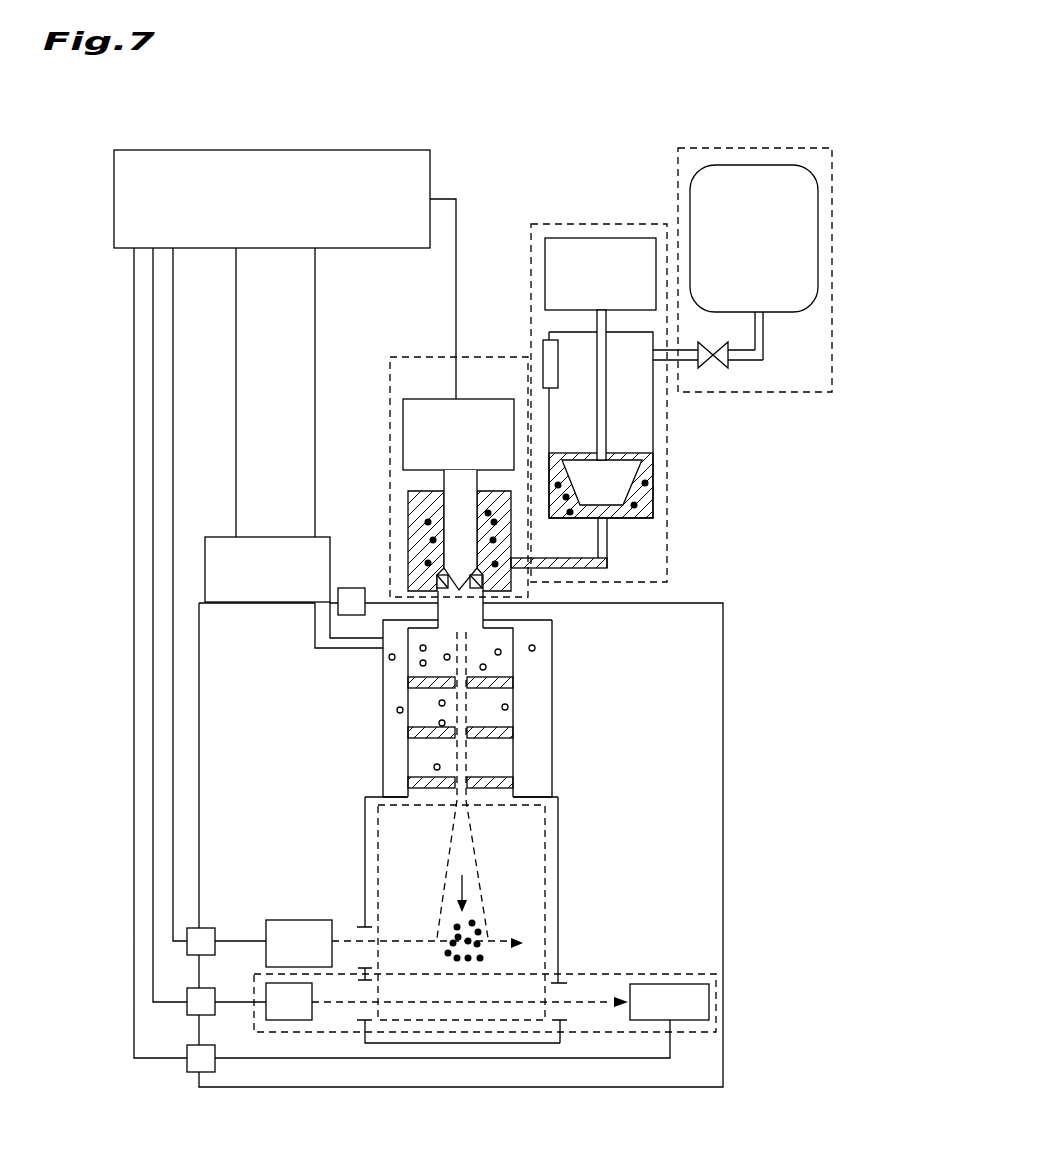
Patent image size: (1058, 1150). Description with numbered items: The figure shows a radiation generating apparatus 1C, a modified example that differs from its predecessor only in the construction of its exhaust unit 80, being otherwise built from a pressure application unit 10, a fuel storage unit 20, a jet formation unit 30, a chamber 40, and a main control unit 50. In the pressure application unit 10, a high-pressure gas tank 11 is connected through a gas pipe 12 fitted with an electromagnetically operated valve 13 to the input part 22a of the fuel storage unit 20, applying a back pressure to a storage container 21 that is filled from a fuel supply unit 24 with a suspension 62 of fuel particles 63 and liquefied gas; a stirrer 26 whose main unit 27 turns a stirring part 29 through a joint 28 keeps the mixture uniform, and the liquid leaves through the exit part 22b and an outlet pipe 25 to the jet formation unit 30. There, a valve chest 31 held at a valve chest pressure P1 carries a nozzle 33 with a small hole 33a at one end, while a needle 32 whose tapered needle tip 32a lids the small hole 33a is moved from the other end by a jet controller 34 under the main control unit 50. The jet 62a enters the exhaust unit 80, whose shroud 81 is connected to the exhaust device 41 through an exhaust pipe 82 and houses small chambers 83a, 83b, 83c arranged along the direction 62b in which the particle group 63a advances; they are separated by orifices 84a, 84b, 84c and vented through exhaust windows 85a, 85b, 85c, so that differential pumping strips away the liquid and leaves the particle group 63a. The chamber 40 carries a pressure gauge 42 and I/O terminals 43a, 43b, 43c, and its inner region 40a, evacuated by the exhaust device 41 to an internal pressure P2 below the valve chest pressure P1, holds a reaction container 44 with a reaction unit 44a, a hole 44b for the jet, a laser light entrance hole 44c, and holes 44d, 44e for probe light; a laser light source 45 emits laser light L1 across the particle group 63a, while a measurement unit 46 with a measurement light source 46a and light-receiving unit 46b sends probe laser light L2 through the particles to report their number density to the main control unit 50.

The radiation generating apparatus 1C is at (710, 65).
The pressure application unit 10 is at (833, 202).
The high-pressure gas tank 11 is at (820, 250).
The gas pipe 12 is at (760, 330).
The valve 13 is at (723, 368).
The fuel storage unit 20 is at (618, 223).
The storage container 21 is at (657, 433).
The input part 22a is at (652, 353).
The exit part 22b is at (605, 538).
The fuel supply unit 24 is at (543, 348).
The outlet pipe 25 is at (602, 560).
The stirrer 26 is at (604, 237).
The main unit 27 is at (566, 247).
The joint 28 is at (597, 316).
The stirring part 29 is at (625, 475).
The jet formation unit 30 is at (415, 357).
The valve chest 31 is at (408, 540).
The needle 32 is at (444, 482).
The needle tip 32a is at (462, 597).
The nozzle 33 is at (437, 580).
The small hole 33a is at (466, 591).
The jet controller 34 is at (403, 422).
The chamber 40 is at (723, 695).
The inner region 40a is at (703, 637).
The exhaust device 41 is at (218, 537).
The pressure gauge 42 is at (353, 588).
The I/O terminal 43a is at (207, 927).
The I/O terminal 43b is at (187, 1010).
The I/O terminal 43c is at (192, 1072).
The reaction container 44 is at (558, 858).
The reaction unit 44a is at (545, 877).
The hole 44b is at (508, 804).
The laser light entrance hole 44c is at (358, 932).
The hole 44d is at (360, 1022).
The hole 44e is at (568, 1020).
The laser light source 45 is at (282, 920).
The measurement unit 46 is at (650, 975).
The measurement light source 46a is at (283, 1020).
The light-receiving unit 46b is at (709, 1010).
The main control unit 50 is at (356, 150).
The suspension 62 is at (643, 457).
The jet 62a is at (450, 867).
The direction 62b is at (463, 890).
The fuel particles 63 is at (632, 505).
The particle group 63a is at (504, 914).
The exhaust unit 80 is at (278, 706).
The shroud 81 is at (553, 667).
The exhaust pipe 82 is at (322, 622).
The small chamber 83a is at (447, 640).
The small chamber 83b is at (440, 716).
The small chamber 83c is at (420, 768).
The orifice 84a is at (515, 680).
The orifice 84b is at (515, 731).
The orifice 84c is at (515, 783).
The exhaust window 85a is at (400, 663).
The exhaust window 85b is at (407, 698).
The exhaust window 85c is at (408, 752).
The valve chest pressure P1 is at (408, 515).
The internal pressure P2 is at (250, 795).
The laser light L1 is at (417, 943).
The probe laser light L2 is at (325, 1003).